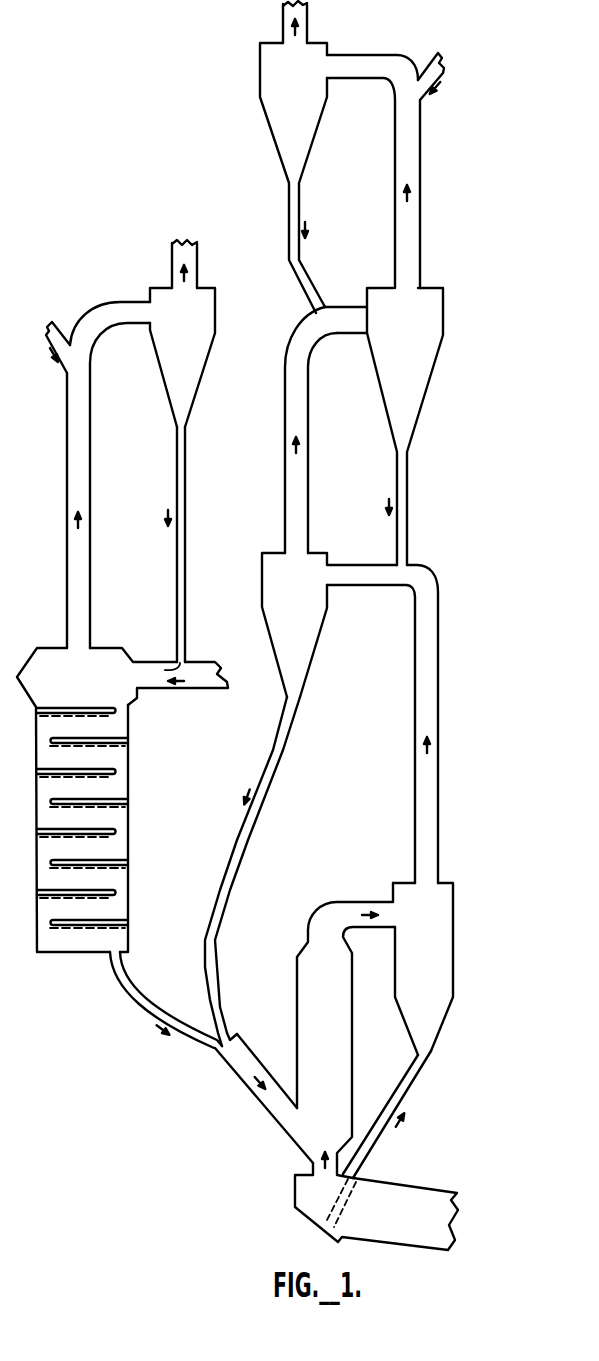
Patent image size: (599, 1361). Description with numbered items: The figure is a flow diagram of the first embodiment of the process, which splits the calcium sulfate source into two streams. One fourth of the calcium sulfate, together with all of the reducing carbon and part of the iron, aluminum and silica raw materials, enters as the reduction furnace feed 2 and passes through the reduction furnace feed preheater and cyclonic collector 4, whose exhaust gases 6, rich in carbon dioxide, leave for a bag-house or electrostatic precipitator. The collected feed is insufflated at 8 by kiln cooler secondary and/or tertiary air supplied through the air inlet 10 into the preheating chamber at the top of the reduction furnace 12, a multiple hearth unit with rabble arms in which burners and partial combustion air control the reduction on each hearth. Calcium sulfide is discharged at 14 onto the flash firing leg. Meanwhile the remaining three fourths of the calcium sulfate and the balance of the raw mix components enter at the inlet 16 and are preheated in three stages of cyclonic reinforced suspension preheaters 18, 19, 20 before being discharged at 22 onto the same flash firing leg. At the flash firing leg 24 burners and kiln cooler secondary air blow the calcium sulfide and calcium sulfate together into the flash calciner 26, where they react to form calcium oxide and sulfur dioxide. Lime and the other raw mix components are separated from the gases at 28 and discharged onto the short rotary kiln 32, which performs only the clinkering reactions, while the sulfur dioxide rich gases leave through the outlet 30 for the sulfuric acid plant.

The reduction furnace feed 2 is at (58, 336).
The reduction furnace feed preheater and cyclonic collector 4 is at (159, 368).
The reduction furnace feed preheater exhaust gases 6 is at (172, 264).
The reduction furnace feed insufflation 8 is at (176, 657).
The kiln cooler secondary and/or tertiary air inlet 10 is at (212, 690).
The reduction furnace 12 is at (130, 790).
The calcium sulfide discharge 14 is at (138, 1002).
The inlet of main portion of calcium sulfate source 16 is at (427, 67).
The suspension preheater 18 is at (268, 122).
The suspension preheater 19 is at (383, 408).
The suspension preheater 20 is at (262, 570).
The preheated calcium sulfate discharge 22 is at (205, 975).
The flash firing leg 24 is at (216, 1046).
The flash calciner 26 is at (297, 980).
The lime discharge 28 is at (402, 1083).
The outlet for SO2 rich gases 30 is at (283, 17).
The rotary kiln 32 is at (390, 1183).